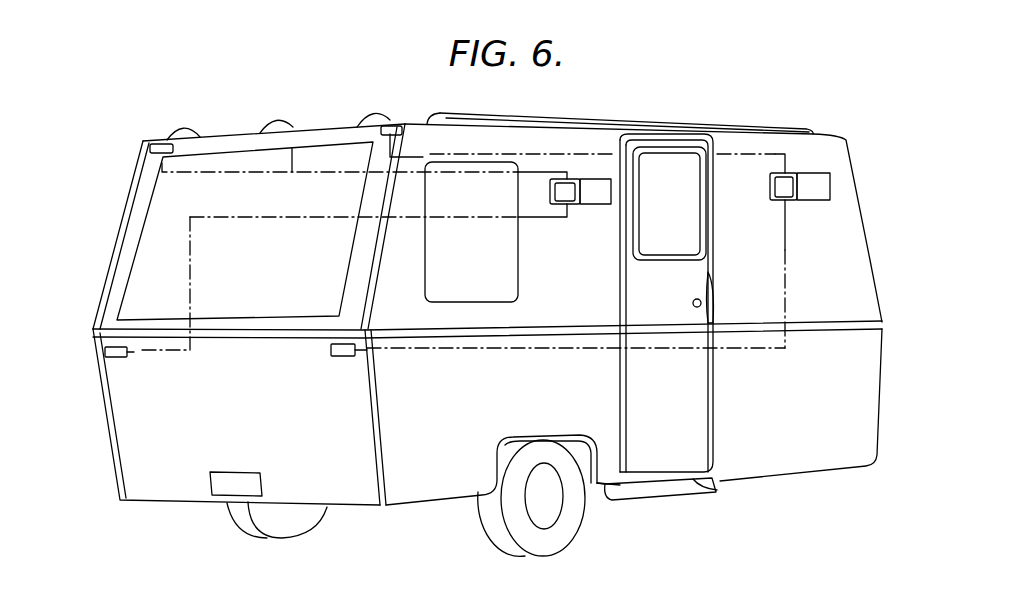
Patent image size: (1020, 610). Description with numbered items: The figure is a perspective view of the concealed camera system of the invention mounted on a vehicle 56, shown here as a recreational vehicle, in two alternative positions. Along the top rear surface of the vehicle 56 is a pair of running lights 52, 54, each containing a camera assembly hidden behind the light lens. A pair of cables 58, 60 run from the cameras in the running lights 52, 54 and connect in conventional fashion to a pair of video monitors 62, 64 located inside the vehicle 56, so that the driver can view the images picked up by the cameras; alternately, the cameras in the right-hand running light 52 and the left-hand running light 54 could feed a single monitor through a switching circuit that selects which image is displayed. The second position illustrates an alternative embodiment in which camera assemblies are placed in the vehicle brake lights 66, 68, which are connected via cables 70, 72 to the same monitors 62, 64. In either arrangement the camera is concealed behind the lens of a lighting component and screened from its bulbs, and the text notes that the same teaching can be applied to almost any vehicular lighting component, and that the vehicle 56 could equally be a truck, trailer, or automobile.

The running light 52 is at (394, 126).
The running light 54 is at (162, 144).
The vehicle 56 is at (852, 134).
The cable 58 is at (530, 154).
The cable 60 is at (292, 148).
The video monitor 62 is at (826, 187).
The video monitor 64 is at (598, 204).
The brake light 66 is at (345, 356).
The brake light 68 is at (118, 357).
The cable 70 is at (748, 348).
The cable 72 is at (190, 283).